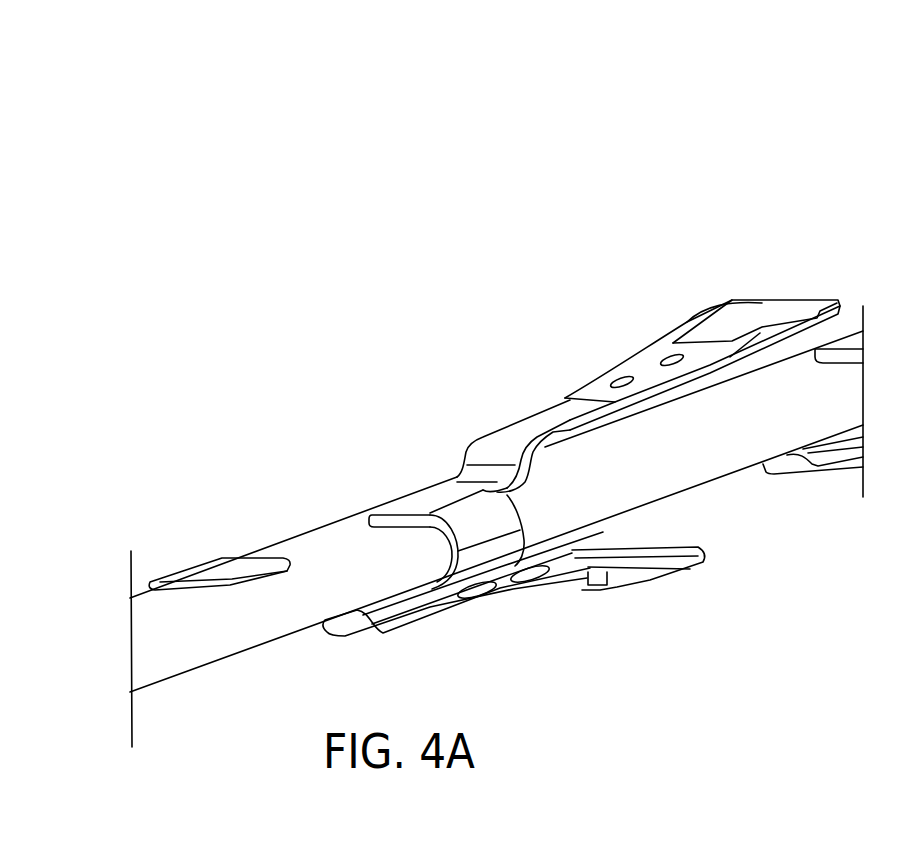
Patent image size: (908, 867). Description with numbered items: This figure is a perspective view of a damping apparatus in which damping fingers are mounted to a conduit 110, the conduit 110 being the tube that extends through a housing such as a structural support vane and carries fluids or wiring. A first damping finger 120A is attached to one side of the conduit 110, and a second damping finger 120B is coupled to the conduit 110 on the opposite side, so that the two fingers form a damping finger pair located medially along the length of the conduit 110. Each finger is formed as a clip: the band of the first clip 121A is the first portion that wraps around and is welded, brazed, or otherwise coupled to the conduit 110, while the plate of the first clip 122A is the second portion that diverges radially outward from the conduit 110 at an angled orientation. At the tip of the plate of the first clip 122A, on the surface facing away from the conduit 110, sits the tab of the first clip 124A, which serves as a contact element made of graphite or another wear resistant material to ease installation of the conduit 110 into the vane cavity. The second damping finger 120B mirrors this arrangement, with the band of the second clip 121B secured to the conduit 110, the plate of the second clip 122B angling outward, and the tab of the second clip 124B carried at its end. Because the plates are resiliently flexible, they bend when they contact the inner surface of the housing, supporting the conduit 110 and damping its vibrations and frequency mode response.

The conduit 110 is at (198, 635).
The first damping finger 120A is at (590, 413).
The band of first clip 121A is at (420, 503).
The plate of first clip 122A is at (640, 362).
The tab of first clip 124A is at (725, 330).
The second damping finger 120B is at (429, 633).
The band of second clip 121B is at (218, 564).
The plate of second clip 122B is at (578, 575).
The tab of second clip 124B is at (638, 594).